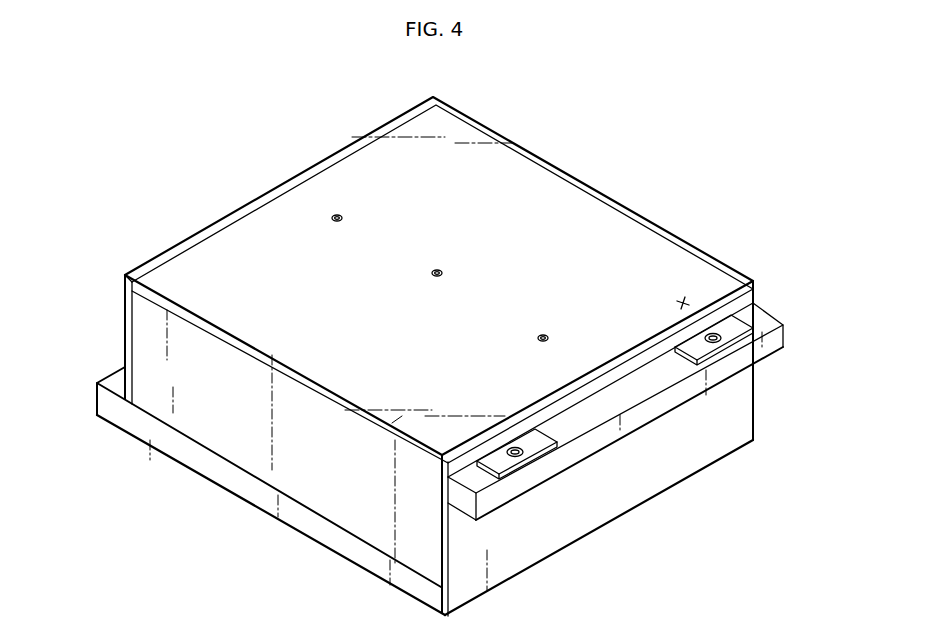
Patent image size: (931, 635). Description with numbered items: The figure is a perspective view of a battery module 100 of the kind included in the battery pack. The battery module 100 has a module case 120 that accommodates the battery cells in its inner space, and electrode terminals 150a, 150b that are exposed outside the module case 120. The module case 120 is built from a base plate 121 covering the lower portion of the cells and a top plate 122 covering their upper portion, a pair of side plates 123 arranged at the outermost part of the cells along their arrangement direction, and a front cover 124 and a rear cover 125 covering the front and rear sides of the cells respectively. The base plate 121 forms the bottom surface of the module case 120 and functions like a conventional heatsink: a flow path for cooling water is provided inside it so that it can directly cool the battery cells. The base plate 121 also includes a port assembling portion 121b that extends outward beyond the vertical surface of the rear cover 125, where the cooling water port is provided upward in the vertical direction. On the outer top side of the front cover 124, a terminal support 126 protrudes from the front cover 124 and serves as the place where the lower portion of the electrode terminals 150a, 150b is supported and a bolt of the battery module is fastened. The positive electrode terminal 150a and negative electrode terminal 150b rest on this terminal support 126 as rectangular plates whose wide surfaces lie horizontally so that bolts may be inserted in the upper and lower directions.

The battery module 100 is at (222, 90).
The module case 120 is at (535, 141).
The top plate 122 is at (595, 210).
The rear cover 125 is at (128, 303).
The port assembling portion 121b is at (104, 407).
The side plates 123 is at (263, 460).
The base plate 121 is at (328, 532).
The front cover 124 is at (635, 483).
The terminal support 126 is at (778, 333).
The positive electrode terminal 150a is at (733, 332).
The negative electrode terminal 150b is at (532, 447).